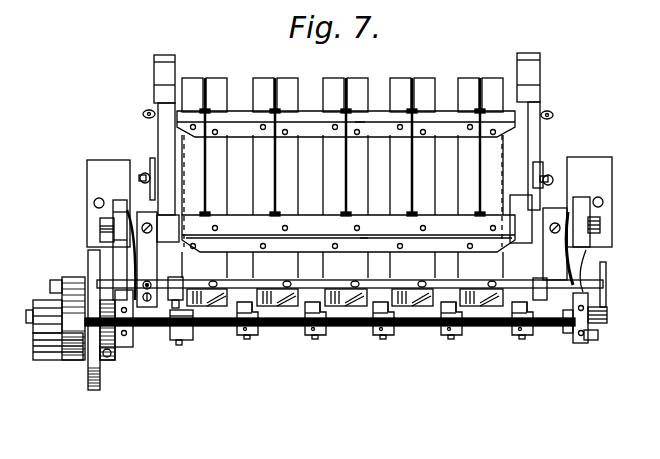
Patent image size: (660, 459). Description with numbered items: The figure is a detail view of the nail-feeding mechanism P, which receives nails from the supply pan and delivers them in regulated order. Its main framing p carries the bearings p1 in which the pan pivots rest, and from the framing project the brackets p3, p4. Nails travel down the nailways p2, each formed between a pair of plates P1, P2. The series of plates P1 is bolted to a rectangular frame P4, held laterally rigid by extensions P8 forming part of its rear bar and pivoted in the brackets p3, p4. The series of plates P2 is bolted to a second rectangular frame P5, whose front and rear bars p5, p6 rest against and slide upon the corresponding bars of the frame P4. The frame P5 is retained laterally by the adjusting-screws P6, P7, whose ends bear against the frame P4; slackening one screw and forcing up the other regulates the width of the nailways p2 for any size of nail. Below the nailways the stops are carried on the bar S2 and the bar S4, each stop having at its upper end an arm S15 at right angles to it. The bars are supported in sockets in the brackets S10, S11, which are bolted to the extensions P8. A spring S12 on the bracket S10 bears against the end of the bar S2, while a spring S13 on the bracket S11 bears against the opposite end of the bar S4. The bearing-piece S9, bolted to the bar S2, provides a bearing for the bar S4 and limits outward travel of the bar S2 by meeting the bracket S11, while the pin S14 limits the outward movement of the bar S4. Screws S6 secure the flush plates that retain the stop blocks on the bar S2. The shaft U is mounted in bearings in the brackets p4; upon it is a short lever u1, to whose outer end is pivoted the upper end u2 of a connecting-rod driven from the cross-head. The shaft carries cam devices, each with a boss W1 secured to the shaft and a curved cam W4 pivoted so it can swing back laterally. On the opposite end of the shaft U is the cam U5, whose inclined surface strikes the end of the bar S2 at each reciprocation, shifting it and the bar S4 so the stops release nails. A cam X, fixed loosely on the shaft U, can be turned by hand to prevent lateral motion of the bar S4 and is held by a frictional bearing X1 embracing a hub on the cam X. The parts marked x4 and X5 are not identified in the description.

The nail-feeding mechanism P is at (346, 92).
The bearings p1 is at (157, 70).
The main framing p is at (347, 158).
The nailways p2 is at (205, 78).
The plates P1 is at (343, 206).
The plates P2 is at (328, 206).
The rectangular frame P4 is at (348, 190).
The rectangular frame P5 is at (353, 181).
The front bar p5 is at (369, 118).
The rear bar p6 is at (368, 249).
The bracket p3 is at (100, 220).
The bracket p4 is at (608, 205).
The adjusting-screw P7 is at (142, 174).
The adjusting-screw P6 is at (552, 176).
The extensions P8 is at (168, 242).
The bracket S10 is at (147, 259).
The bracket S11 is at (564, 250).
The spring S13 is at (600, 250).
The bearing-piece S9 is at (536, 282).
The spring S12 is at (110, 252).
The bar S4 is at (98, 280).
The screws S6 is at (175, 286).
The pin S14 is at (193, 330).
The arm S15 is at (346, 302).
The curved cam W4 is at (379, 325).
The boss W1 is at (396, 327).
The shaft U is at (330, 335).
The cam U5 is at (607, 317).
The bar S2 is at (606, 300).
The short lever u1 is at (70, 280).
The upper end of connecting-rod u2 is at (52, 282).
The gear housing x4 is at (78, 360).
The cam X is at (100, 328).
The frictional bearing X1 is at (116, 339).
The plate X5 is at (116, 334).